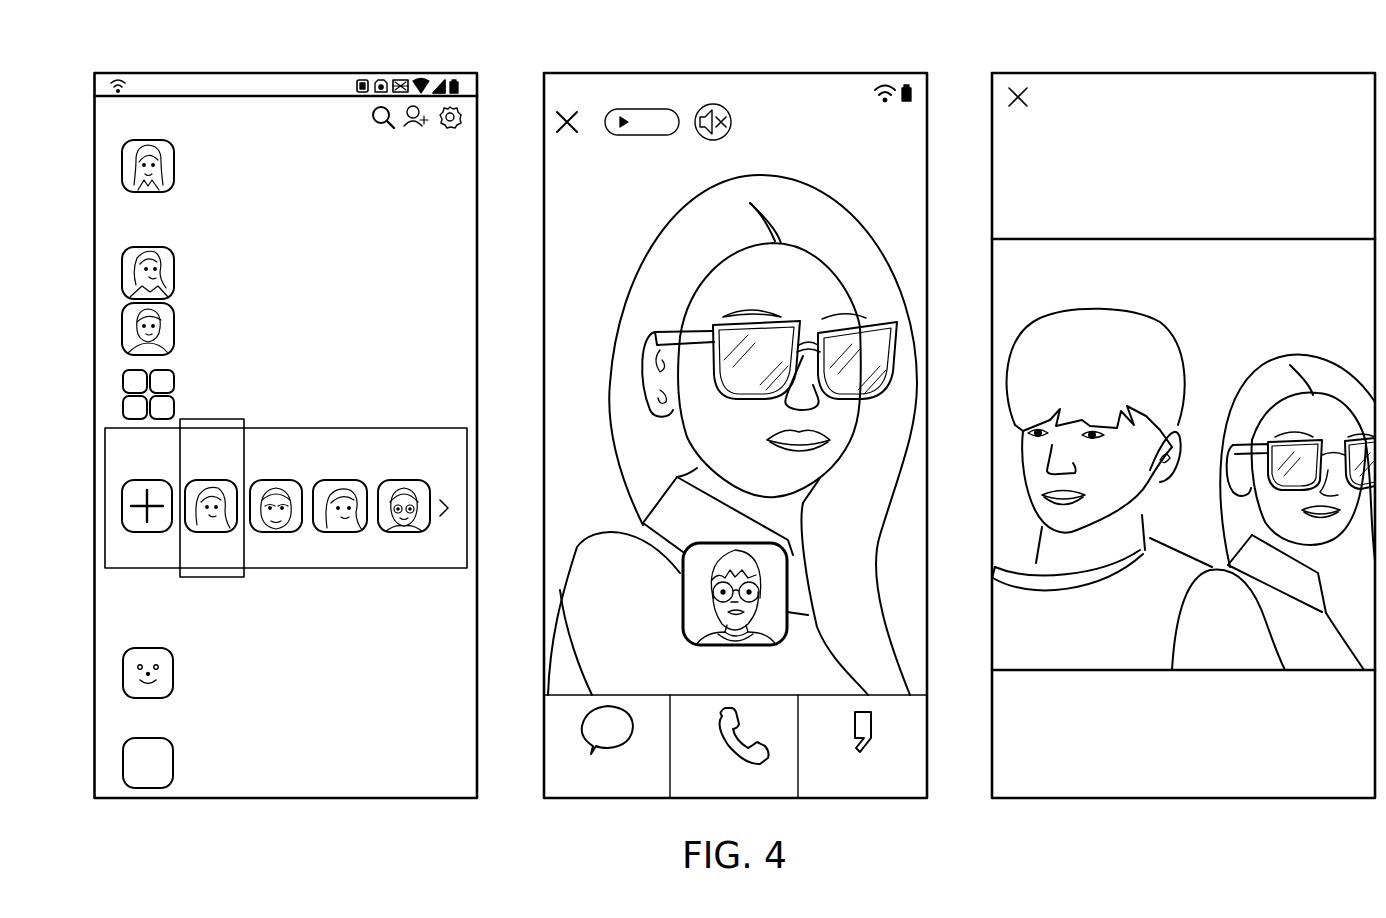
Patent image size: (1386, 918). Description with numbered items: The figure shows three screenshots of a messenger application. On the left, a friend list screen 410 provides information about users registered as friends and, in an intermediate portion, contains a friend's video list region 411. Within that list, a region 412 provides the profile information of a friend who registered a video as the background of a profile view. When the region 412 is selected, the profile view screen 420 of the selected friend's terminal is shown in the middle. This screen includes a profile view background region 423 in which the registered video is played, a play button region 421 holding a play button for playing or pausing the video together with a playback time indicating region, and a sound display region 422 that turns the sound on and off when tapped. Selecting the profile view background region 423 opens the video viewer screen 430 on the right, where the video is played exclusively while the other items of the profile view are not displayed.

The friend list screen 410 is at (423, 74).
The friend's video list region 411 is at (423, 570).
The region in which profile information of a friend is provided 412 is at (244, 577).
The profile view screen 420 is at (873, 73).
The play button region 421 is at (643, 106).
The sound display region 422 is at (714, 103).
The profile view background region 423 is at (827, 465).
The video viewer screen 430 is at (1322, 73).